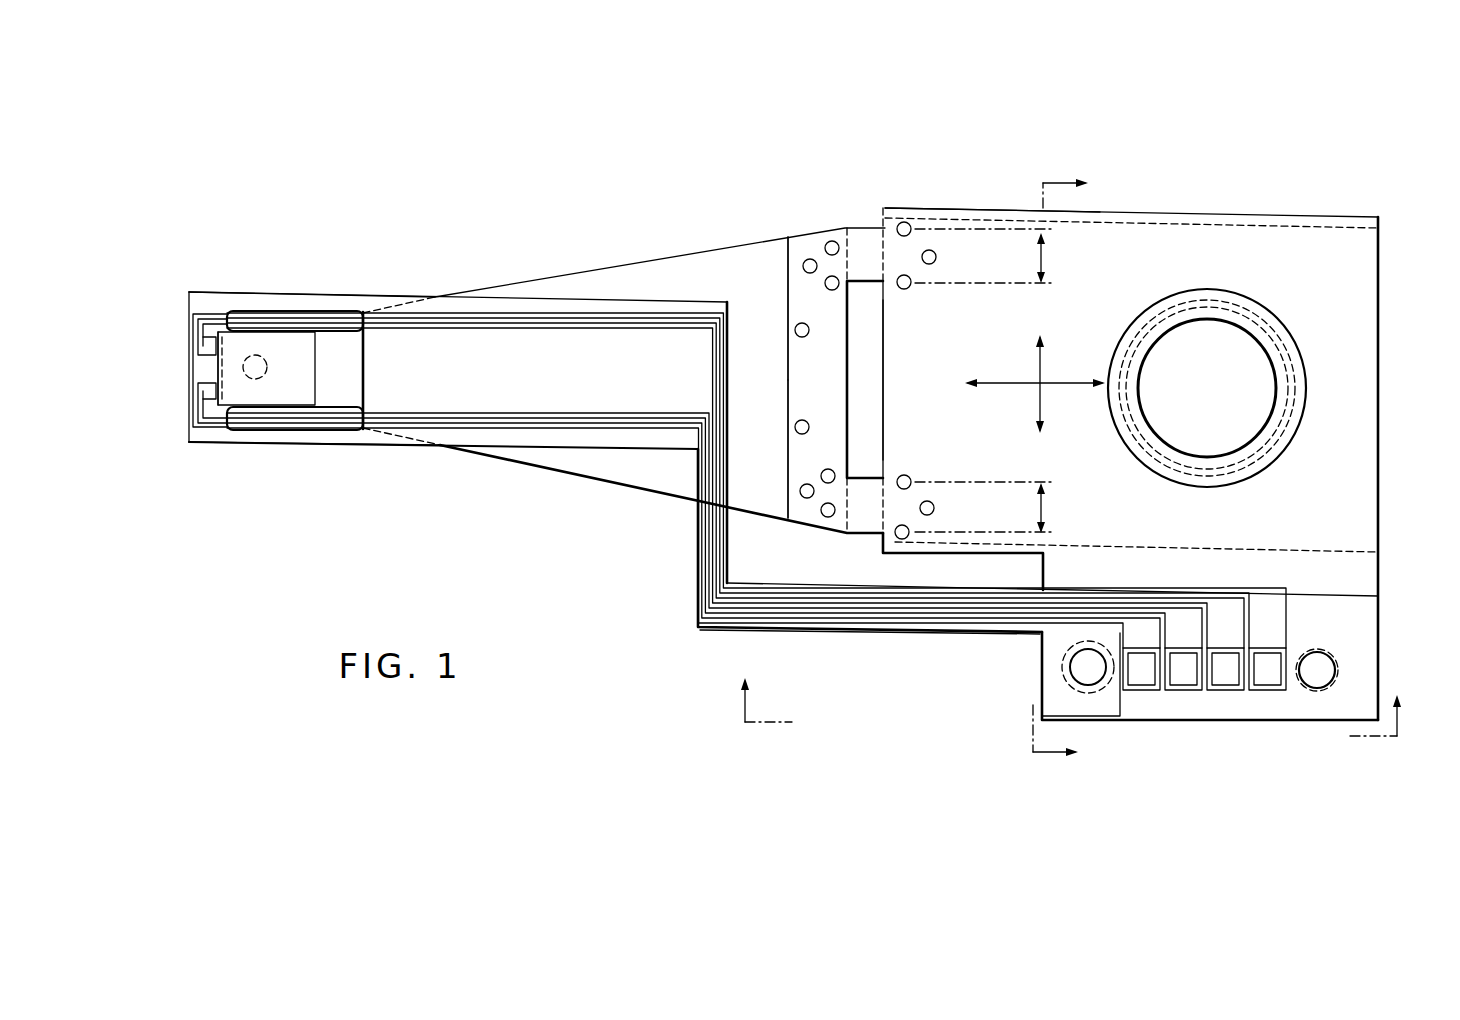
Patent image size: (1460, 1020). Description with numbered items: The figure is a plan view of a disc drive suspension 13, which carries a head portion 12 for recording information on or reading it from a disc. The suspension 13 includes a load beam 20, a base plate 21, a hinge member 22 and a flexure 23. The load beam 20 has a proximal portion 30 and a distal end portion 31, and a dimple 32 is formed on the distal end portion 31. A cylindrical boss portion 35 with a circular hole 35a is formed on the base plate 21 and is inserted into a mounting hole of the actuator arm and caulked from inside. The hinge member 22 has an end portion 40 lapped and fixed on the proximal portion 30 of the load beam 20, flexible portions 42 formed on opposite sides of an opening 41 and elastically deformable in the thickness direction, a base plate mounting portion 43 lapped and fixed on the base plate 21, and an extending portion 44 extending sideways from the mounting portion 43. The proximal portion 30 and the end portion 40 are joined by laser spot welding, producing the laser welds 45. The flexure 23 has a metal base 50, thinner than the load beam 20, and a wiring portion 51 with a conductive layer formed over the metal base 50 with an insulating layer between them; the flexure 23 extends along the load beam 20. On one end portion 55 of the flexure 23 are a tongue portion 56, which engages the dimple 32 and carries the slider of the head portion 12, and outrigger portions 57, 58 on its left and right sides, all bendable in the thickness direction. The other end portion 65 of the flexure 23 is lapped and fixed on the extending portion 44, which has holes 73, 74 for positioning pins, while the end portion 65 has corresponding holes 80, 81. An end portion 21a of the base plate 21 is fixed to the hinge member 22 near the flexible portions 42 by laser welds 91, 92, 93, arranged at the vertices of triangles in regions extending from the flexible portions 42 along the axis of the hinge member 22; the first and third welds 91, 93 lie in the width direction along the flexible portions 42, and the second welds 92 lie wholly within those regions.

The head portion 12 is at (237, 455).
The suspension 13 is at (628, 170).
The load beam 20 is at (590, 272).
The base plate 21 is at (1172, 210).
The end portion of the base plate 21a is at (890, 396).
The hinge member 22 is at (955, 200).
The flexure 23 is at (838, 634).
The proximal portion 30 is at (808, 237).
The distal end portion 31 is at (234, 343).
The dimple 32 is at (268, 367).
The boss portion 35 is at (1140, 380).
The circular hole 35a is at (1238, 448).
The end portion 40 is at (808, 520).
The opening 41 is at (893, 368).
The flexible portions 42 is at (866, 235).
The base plate mounting portion 43 is at (1258, 235).
The extending portion 44 is at (1038, 660).
The laser welds 45 is at (826, 252).
The metal base 50 is at (607, 445).
The wiring portion 51 is at (478, 430).
The one end portion 55 is at (200, 368).
The tongue portion 56 is at (300, 382).
The outrigger portion 57 is at (304, 300).
The outrigger portion 58 is at (303, 445).
The other end portion 65 is at (1234, 707).
The hole 73 is at (1323, 687).
The hole 74 is at (1110, 680).
The hole 80 is at (1304, 686).
The hole 81 is at (1086, 682).
The first laser weld 91 is at (903, 221).
The second laser weld 92 is at (937, 257).
The third laser weld 93 is at (911, 286).